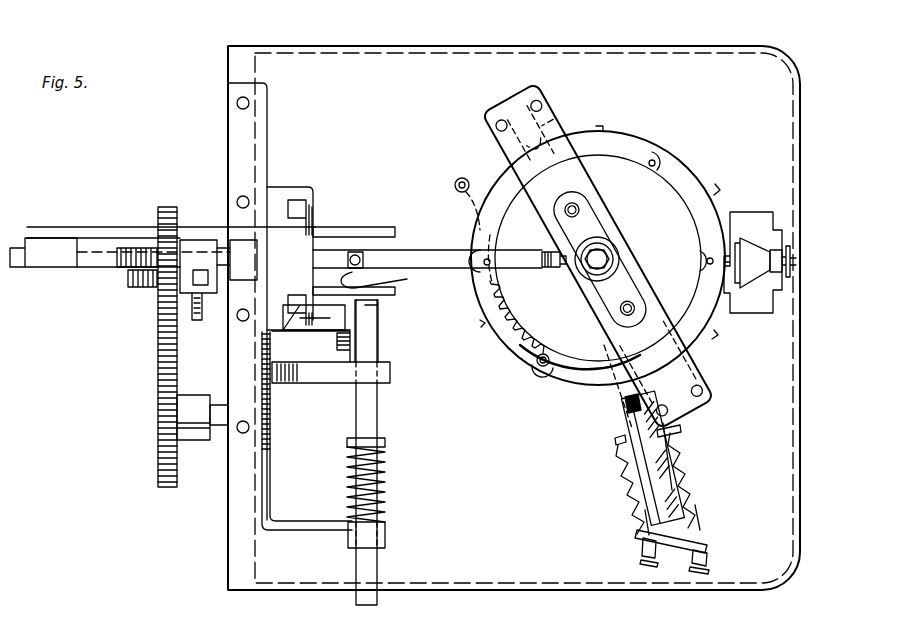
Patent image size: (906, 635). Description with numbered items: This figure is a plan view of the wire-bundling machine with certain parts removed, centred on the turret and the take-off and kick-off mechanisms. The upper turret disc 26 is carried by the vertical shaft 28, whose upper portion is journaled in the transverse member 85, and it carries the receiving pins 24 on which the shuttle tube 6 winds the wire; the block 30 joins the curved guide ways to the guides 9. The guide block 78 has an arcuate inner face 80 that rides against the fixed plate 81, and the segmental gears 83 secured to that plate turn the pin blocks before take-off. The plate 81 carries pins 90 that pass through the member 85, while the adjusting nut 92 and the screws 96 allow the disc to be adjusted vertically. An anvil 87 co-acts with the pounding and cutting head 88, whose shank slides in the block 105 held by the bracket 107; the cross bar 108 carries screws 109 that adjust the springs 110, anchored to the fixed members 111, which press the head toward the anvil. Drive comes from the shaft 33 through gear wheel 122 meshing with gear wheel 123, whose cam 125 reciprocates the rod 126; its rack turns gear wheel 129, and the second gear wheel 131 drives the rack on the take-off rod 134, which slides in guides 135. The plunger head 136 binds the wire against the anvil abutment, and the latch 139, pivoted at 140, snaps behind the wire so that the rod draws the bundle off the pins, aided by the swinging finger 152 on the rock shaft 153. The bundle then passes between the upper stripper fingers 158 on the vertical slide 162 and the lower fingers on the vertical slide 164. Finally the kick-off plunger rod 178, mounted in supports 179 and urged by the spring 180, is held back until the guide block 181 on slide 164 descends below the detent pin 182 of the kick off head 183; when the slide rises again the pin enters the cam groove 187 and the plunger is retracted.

The tube 6 is at (790, 262).
The guides 9 is at (755, 250).
The receiving pins 24 is at (665, 148).
The upper turret disc 26 is at (557, 390).
The vertical shaft 28 is at (615, 248).
The block 30 is at (755, 285).
The shaft 33 is at (220, 432).
The guide block 78 is at (543, 372).
The arcuate inner faces 80 is at (548, 357).
The fixed plate 81 is at (570, 295).
The segmental gears 83 is at (512, 345).
The transverse member 85 is at (652, 312).
The anvil 87 is at (626, 405).
The head 88 is at (628, 430).
The pins 90 is at (578, 210).
The adjusting nut 92 is at (619, 259).
The screws 96 is at (602, 128).
The block 105 is at (683, 480).
The bracket 107 is at (680, 440).
The cross bar 108 is at (640, 545).
The screws 109 is at (700, 528).
The springs 110 is at (698, 497).
The fixed members 111 is at (685, 438).
The gear wheel 122 is at (158, 412).
The gear wheel 123 is at (158, 330).
The cam 125 is at (197, 320).
The rod 126 is at (157, 283).
The gear wheel 129 is at (97, 270).
The second gear wheel 131 is at (126, 240).
The take-off rod 134 is at (62, 303).
The guides 135 is at (50, 270).
The head 136 is at (466, 250).
The latch 139 is at (428, 275).
The pivot 140 is at (355, 252).
The swinging finger 152 is at (458, 192).
The vertical rock shaft 153 is at (458, 178).
The upper stripper fingers 158 is at (330, 225).
The vertical slide 162 is at (300, 200).
The vertical slide 164 is at (283, 383).
The plunger rod 178 is at (385, 417).
The supports 179 is at (392, 370).
The spring 180 is at (386, 481).
The guide block 181 is at (330, 322).
The detent pin 182 is at (333, 352).
The kick off head 183 is at (382, 345).
The cam groove 187 is at (320, 297).